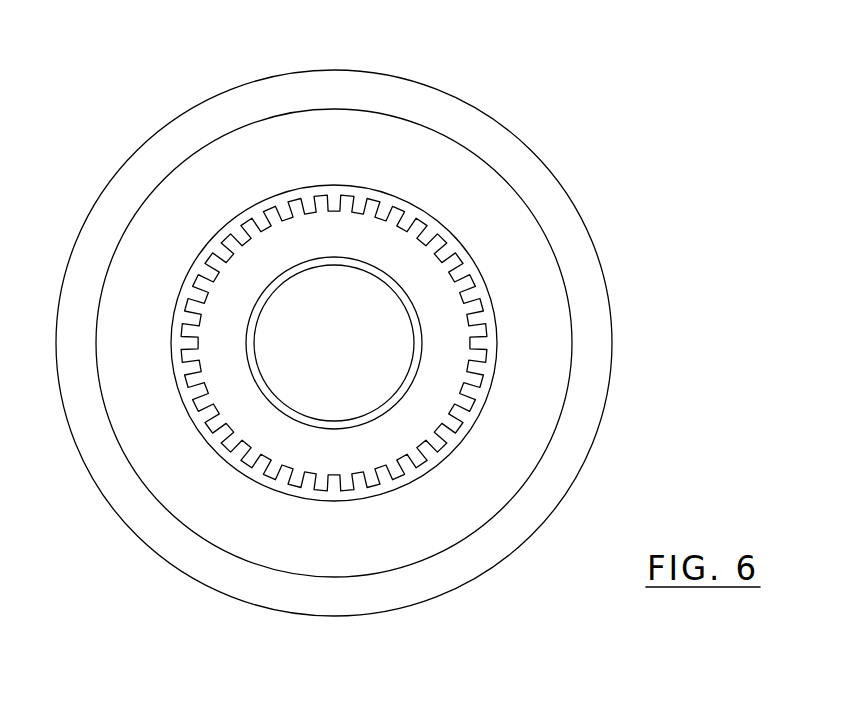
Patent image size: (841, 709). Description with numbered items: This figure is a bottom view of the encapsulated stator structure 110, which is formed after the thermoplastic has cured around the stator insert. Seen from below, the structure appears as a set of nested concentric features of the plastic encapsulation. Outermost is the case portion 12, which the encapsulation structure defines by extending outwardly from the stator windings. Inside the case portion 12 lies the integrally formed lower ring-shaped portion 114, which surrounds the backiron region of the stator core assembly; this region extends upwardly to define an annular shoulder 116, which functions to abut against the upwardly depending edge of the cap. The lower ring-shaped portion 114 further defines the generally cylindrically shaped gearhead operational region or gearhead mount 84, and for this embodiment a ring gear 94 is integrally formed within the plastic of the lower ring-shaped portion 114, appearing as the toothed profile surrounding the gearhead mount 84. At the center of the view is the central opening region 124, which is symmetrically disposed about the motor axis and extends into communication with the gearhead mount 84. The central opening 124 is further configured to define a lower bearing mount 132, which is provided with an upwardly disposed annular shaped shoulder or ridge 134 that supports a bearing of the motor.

The encapsulated stator structure 110 is at (80, 174).
The case portion 12 is at (515, 135).
The annular shoulder 116 is at (553, 213).
The lower ring-shaped portion 114 is at (545, 300).
The ring gear 94 is at (321, 198).
The gearhead mount 84 is at (230, 303).
The annular shoulder or ridge 134 is at (332, 262).
The lower bearing mount 132 is at (340, 417).
The central opening region 124 is at (361, 353).